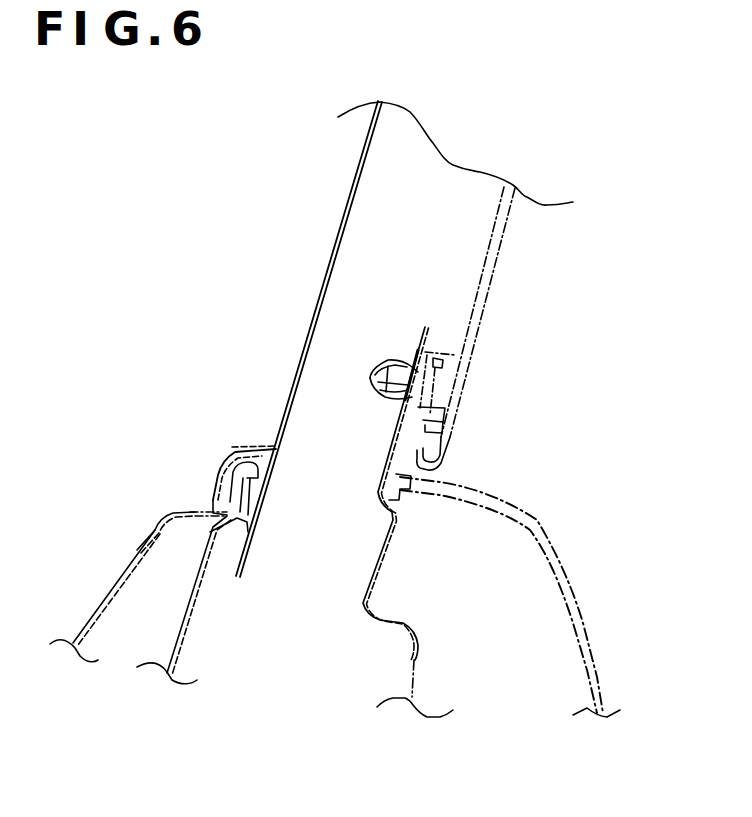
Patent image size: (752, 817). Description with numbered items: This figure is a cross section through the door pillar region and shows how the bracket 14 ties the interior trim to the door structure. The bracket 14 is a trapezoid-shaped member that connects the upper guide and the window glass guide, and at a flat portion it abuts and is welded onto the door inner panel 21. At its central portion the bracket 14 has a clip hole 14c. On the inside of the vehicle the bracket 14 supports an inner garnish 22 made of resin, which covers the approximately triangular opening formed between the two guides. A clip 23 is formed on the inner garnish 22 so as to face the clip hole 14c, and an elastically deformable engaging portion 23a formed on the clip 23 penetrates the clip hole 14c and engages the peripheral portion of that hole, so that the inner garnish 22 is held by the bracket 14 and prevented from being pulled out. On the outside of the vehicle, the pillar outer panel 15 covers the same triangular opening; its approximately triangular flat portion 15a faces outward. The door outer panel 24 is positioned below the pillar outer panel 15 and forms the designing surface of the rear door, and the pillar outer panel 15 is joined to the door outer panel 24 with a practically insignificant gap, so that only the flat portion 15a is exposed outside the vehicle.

The pillar outer panel 15 is at (350, 197).
The flat portion 15a is at (311, 339).
The inner garnish 22 is at (492, 288).
The clip 23 is at (435, 385).
The engaging portion 23a is at (390, 352).
The bracket 14 is at (387, 442).
The clip hole 14c is at (398, 403).
The door inner panel 21 is at (417, 660).
The door outer panel 24 is at (137, 548).